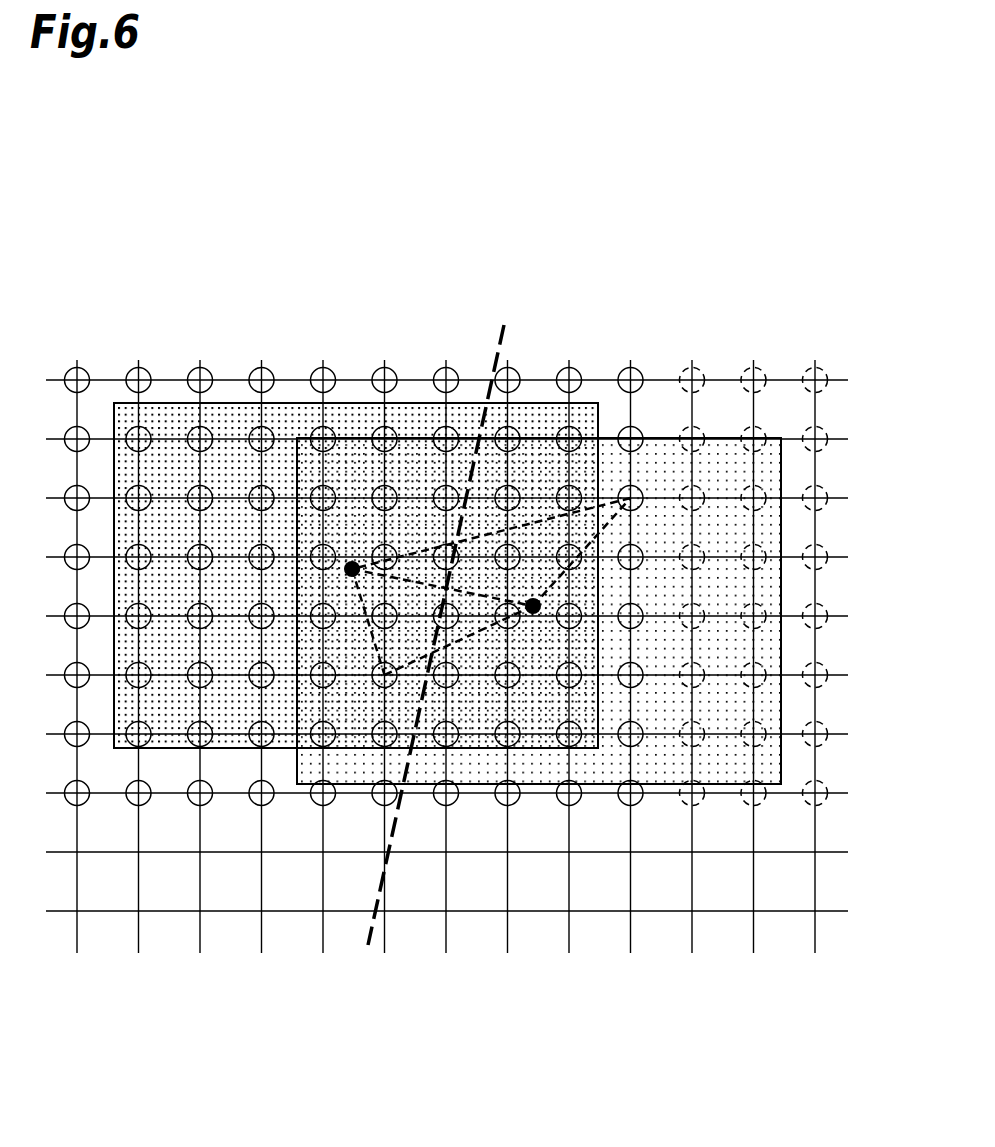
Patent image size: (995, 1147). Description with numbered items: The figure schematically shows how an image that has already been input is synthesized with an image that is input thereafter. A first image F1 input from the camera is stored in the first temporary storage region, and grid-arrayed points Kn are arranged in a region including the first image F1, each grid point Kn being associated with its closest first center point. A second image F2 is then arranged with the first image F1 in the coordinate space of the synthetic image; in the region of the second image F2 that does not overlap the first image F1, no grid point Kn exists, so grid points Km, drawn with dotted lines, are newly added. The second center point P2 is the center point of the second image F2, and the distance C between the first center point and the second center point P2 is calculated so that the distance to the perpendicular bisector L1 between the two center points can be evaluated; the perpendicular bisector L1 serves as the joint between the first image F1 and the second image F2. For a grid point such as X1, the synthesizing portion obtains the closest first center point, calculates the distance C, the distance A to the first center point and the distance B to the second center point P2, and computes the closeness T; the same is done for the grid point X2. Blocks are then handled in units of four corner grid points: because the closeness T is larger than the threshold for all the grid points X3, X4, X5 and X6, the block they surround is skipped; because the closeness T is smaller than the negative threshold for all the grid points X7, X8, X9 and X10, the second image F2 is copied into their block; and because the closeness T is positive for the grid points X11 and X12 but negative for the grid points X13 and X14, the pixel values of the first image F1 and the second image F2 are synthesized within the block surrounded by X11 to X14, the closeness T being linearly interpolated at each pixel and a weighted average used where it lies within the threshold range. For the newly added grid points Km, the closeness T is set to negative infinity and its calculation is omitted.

The grid point Kn is at (87, 370).
The newly added grid point Km is at (822, 427).
The perpendicular bisector L1 is at (481, 430).
The first image F1 is at (523, 403).
The second image F2 is at (720, 437).
The grid point X1 is at (638, 502).
The grid point X2 is at (378, 683).
The grid point X3 is at (140, 445).
The grid point X4 is at (140, 505).
The grid point X5 is at (202, 445).
The grid point X6 is at (202, 505).
The grid point X7 is at (518, 680).
The grid point X8 is at (518, 740).
The grid point X9 is at (577, 680).
The grid point X10 is at (577, 740).
The grid point X11 is at (442, 450).
The grid point X12 is at (442, 510).
The grid point X13 is at (512, 430).
The grid point X14 is at (513, 497).
The second center point P2 is at (543, 612).
The distance to the first center point A is at (508, 586).
The distance to the second center point B is at (487, 586).
The distance between center points C is at (442, 594).